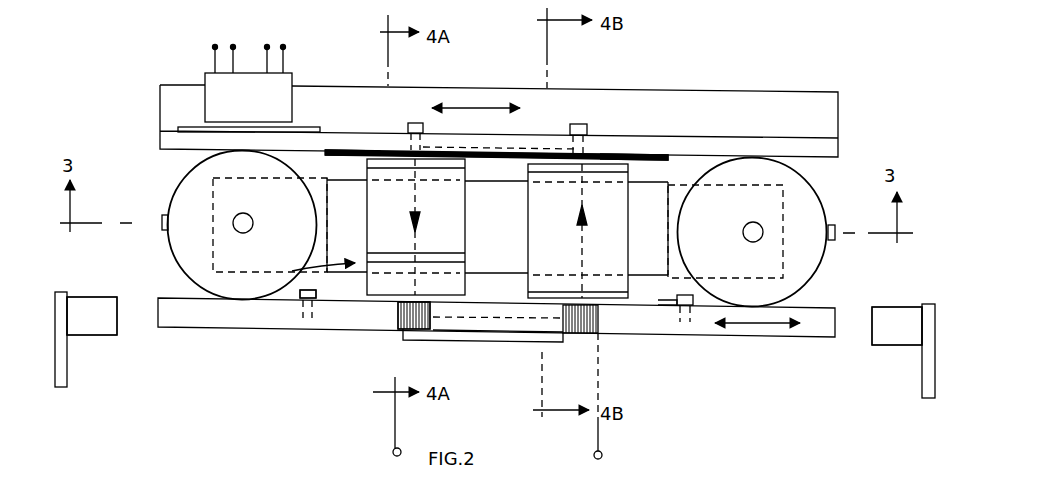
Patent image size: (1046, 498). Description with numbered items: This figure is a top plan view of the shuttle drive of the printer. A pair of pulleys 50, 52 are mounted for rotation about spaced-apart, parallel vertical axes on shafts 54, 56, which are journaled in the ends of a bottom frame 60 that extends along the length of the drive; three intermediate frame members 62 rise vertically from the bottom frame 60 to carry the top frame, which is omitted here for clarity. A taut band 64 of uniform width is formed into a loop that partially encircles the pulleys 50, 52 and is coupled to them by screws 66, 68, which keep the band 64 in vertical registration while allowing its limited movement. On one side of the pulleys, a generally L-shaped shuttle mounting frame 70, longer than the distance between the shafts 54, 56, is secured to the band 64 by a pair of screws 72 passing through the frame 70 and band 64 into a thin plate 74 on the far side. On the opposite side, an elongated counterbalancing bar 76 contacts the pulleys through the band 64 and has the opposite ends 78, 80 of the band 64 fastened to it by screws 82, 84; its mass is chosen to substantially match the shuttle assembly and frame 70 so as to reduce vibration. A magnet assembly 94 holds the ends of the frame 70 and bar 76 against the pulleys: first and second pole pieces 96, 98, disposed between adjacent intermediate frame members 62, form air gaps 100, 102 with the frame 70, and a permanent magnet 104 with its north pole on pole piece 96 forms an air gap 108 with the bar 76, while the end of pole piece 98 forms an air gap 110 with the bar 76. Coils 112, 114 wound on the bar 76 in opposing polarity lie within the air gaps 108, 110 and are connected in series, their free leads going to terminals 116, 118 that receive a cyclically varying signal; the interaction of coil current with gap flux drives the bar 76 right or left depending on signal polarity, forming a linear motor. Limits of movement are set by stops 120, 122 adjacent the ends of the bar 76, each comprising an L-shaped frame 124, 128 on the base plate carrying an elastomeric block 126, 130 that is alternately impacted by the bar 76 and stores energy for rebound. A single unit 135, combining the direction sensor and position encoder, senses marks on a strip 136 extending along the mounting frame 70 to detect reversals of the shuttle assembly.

The pulley 50 is at (810, 270).
The pulley 52 is at (183, 262).
The shaft 54 is at (746, 241).
The shaft 56 is at (246, 234).
The bottom frame 60 is at (785, 212).
The intermediate frame members 62 is at (351, 236).
The band 64 is at (282, 300).
The screw 66 is at (836, 239).
The screw 68 is at (163, 229).
The shuttle mounting frame 70 is at (838, 125).
The screws 72 is at (411, 123).
The plate 74 is at (602, 157).
The counterbalancing bar 76 is at (797, 329).
The end of the band 78 is at (332, 300).
The end of the band 80 is at (670, 306).
The screw 82 is at (315, 294).
The screw 84 is at (676, 298).
The magnet assembly 94 is at (317, 260).
The first pole piece 96 is at (372, 190).
The second pole piece 98 is at (528, 190).
The air gap 100 is at (383, 158).
The air gap 102 is at (622, 157).
The permanent magnet 104 is at (437, 313).
The air gap 108 is at (385, 340).
The air gap 110 is at (537, 306).
The coil 112 is at (414, 323).
The coil 114 is at (580, 325).
The terminal 116 is at (393, 453).
The terminal 118 is at (602, 456).
The stop 120 is at (896, 348).
The stop 122 is at (95, 339).
The L-shaped frame 124 is at (921, 383).
The elastomeric block 126 is at (897, 313).
The L-shaped frame 128 is at (70, 372).
The elastomeric block 130 is at (87, 303).
The single unit 135 is at (207, 92).
The strip 136 is at (305, 132).